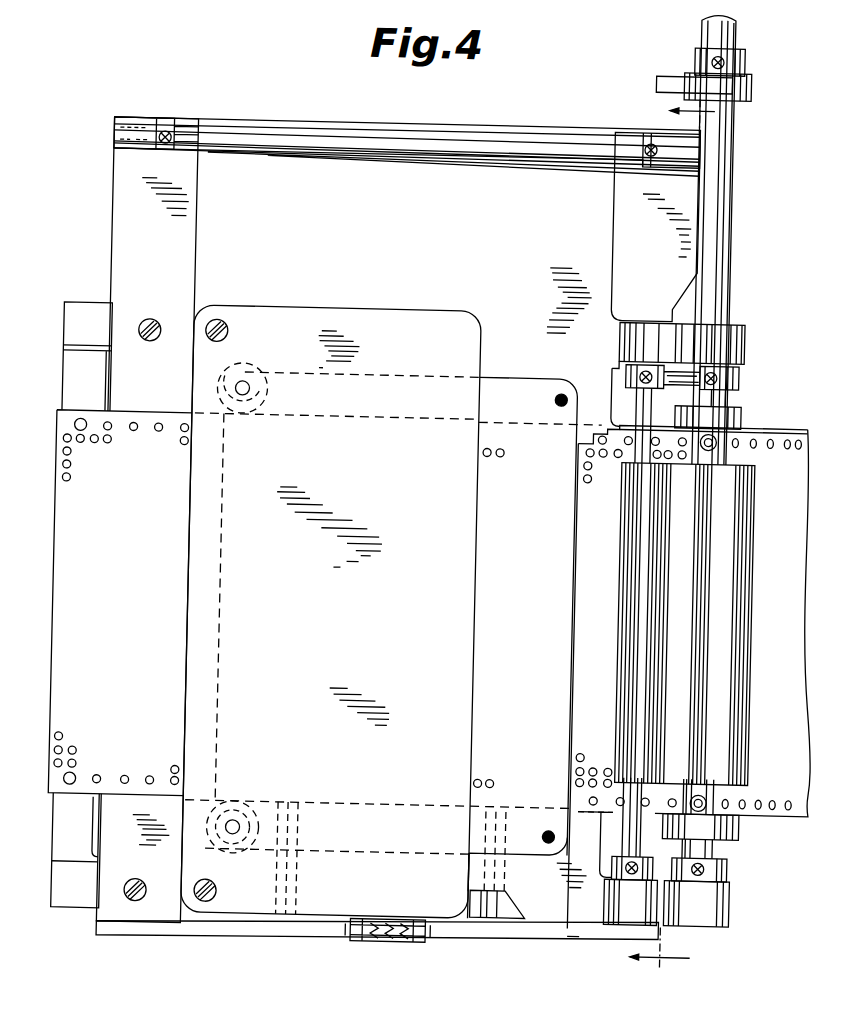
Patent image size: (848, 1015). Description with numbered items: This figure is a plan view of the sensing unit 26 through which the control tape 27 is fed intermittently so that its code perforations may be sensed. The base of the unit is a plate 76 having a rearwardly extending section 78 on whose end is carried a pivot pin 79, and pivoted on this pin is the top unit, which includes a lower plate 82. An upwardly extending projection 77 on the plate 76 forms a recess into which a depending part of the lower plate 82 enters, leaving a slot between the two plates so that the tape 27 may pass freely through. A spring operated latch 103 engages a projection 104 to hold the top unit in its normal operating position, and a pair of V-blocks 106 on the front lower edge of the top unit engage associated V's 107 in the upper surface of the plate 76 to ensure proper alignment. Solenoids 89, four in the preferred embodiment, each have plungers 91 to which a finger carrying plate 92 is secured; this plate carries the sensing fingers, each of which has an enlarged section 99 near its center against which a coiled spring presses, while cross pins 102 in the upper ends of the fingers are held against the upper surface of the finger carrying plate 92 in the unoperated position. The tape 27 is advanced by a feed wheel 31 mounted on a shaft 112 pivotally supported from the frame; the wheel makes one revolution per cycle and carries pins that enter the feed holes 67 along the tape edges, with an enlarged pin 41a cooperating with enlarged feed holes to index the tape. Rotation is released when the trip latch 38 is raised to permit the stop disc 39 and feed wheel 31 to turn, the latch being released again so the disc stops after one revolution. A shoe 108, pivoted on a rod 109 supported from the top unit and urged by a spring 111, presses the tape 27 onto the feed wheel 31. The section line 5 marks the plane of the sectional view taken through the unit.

The section line 5 is at (659, 536).
The sensing unit 26 is at (81, 915).
The tape 27 is at (79, 803).
The feed wheel 31 is at (726, 424).
The trip latch 38 is at (652, 77).
The stop disc 39 is at (741, 78).
The enlarged pin 41a is at (715, 434).
The feed holes 67 is at (183, 437).
The plate 76 is at (167, 913).
The upwardly extending projection 77 is at (611, 401).
The rearwardly extending section 78 is at (678, 179).
The pivot pin 79 is at (177, 135).
The lower plate 82 is at (460, 176).
The solenoids 89 is at (247, 377).
The plungers 91 is at (246, 393).
The finger carrying plate 92 is at (484, 394).
The enlarged section 99 is at (500, 448).
The cross pins 102 is at (486, 456).
The spring operated latch 103 is at (410, 946).
The projection 104 is at (343, 932).
The V-blocks 106 is at (478, 868).
The V's 107 is at (507, 913).
The shoe 108 is at (739, 683).
The rod 109 is at (579, 819).
The spring 111 is at (667, 368).
The shaft 112 is at (722, 256).